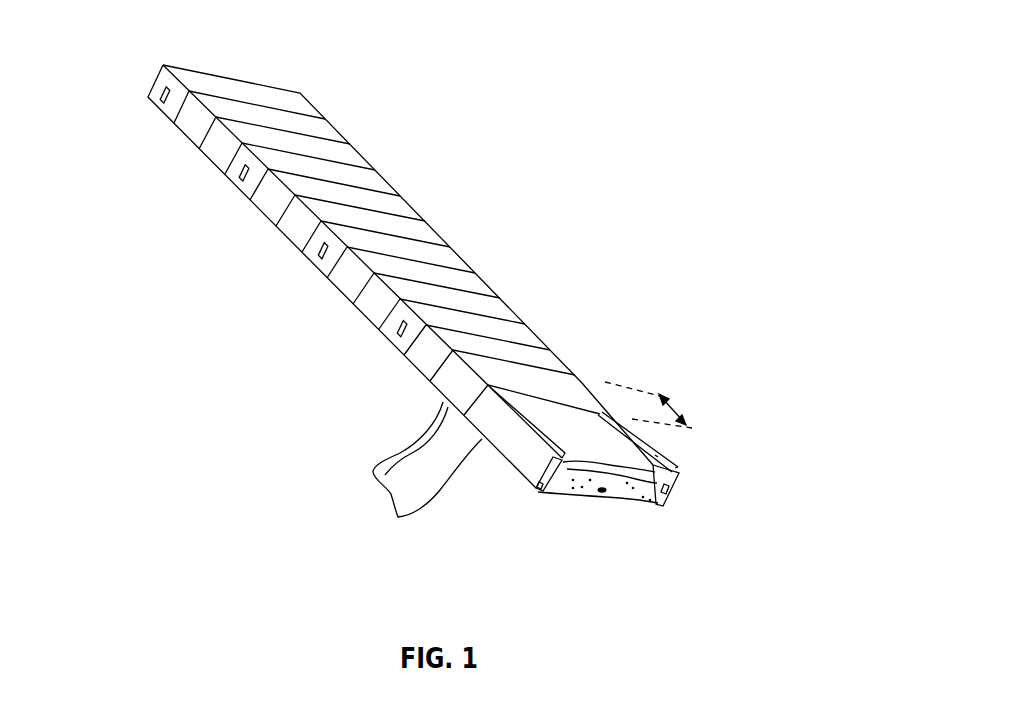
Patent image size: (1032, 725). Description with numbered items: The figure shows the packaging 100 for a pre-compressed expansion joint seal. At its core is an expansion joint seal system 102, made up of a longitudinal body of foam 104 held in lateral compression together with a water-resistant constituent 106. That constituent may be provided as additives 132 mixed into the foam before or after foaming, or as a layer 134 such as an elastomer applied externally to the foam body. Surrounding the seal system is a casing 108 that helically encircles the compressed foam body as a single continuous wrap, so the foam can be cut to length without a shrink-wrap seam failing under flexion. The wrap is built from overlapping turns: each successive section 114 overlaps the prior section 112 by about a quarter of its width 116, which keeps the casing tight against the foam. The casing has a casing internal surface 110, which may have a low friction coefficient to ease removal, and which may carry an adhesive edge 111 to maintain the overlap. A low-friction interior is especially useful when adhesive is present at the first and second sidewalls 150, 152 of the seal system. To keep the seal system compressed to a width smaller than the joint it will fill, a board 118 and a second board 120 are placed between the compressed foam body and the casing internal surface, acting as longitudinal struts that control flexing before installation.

The packaging 100 is at (678, 41).
The expansion joint seal system 102 is at (658, 506).
The longitudinal body of foam 104 is at (576, 496).
The water-resistant constituent 106 is at (678, 468).
The casing 108 is at (335, 130).
The casing internal surface 110 is at (432, 491).
The adhesive edge 111 is at (410, 448).
The prior section 112 is at (343, 280).
The successive section 114 is at (372, 312).
The width 116 is at (665, 402).
The board 118 is at (537, 493).
The second board 120 is at (679, 474).
The additives 132 is at (631, 493).
The layer 134 is at (658, 455).
The expansion joint seal system first sidewall 150 is at (150, 96).
The expansion joint seal system second sidewall 152 is at (667, 504).